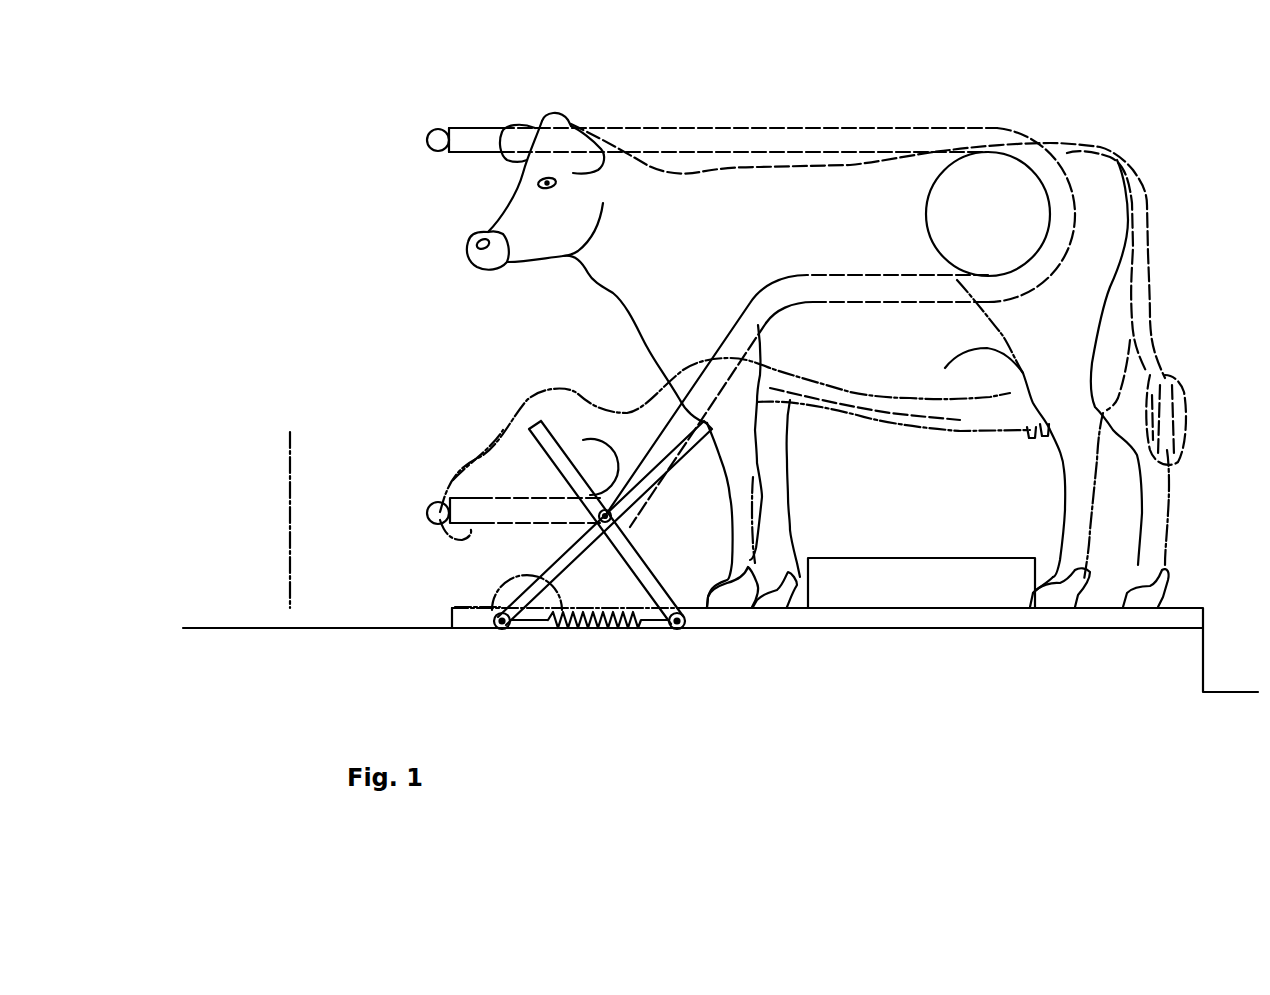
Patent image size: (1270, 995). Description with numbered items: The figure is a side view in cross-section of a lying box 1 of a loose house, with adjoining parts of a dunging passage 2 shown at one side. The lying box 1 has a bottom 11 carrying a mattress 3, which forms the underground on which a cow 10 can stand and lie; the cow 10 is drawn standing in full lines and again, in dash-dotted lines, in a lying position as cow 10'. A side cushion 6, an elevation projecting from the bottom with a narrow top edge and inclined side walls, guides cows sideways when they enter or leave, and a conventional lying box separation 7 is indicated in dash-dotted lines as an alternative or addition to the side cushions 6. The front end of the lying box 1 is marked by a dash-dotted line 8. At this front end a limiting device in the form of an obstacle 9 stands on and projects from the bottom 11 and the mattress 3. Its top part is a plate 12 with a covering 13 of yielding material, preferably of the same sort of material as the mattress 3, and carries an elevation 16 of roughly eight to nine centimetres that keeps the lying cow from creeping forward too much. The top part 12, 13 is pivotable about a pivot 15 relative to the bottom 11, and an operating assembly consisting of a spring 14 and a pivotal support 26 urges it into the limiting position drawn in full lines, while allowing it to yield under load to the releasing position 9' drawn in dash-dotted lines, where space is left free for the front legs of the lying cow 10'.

The lying box 1 is at (345, 155).
The dunging passage 2 is at (1248, 578).
The mattress 3 is at (850, 620).
The side cushions 6 is at (902, 570).
The lying box separation 7 is at (775, 128).
The front end line 8 is at (288, 450).
The obstacle (limiting device) 9 is at (485, 410).
The releasing position 9' is at (446, 588).
The cow 10 is at (901, 310).
The cow in lying position 10' is at (507, 462).
The bottom 11 is at (955, 628).
The plate 12 is at (647, 592).
The covering 13 is at (547, 428).
The spring 14 is at (583, 630).
The pivot 15 is at (677, 630).
The elevation 16 is at (588, 448).
The pivotal support 26 is at (563, 560).